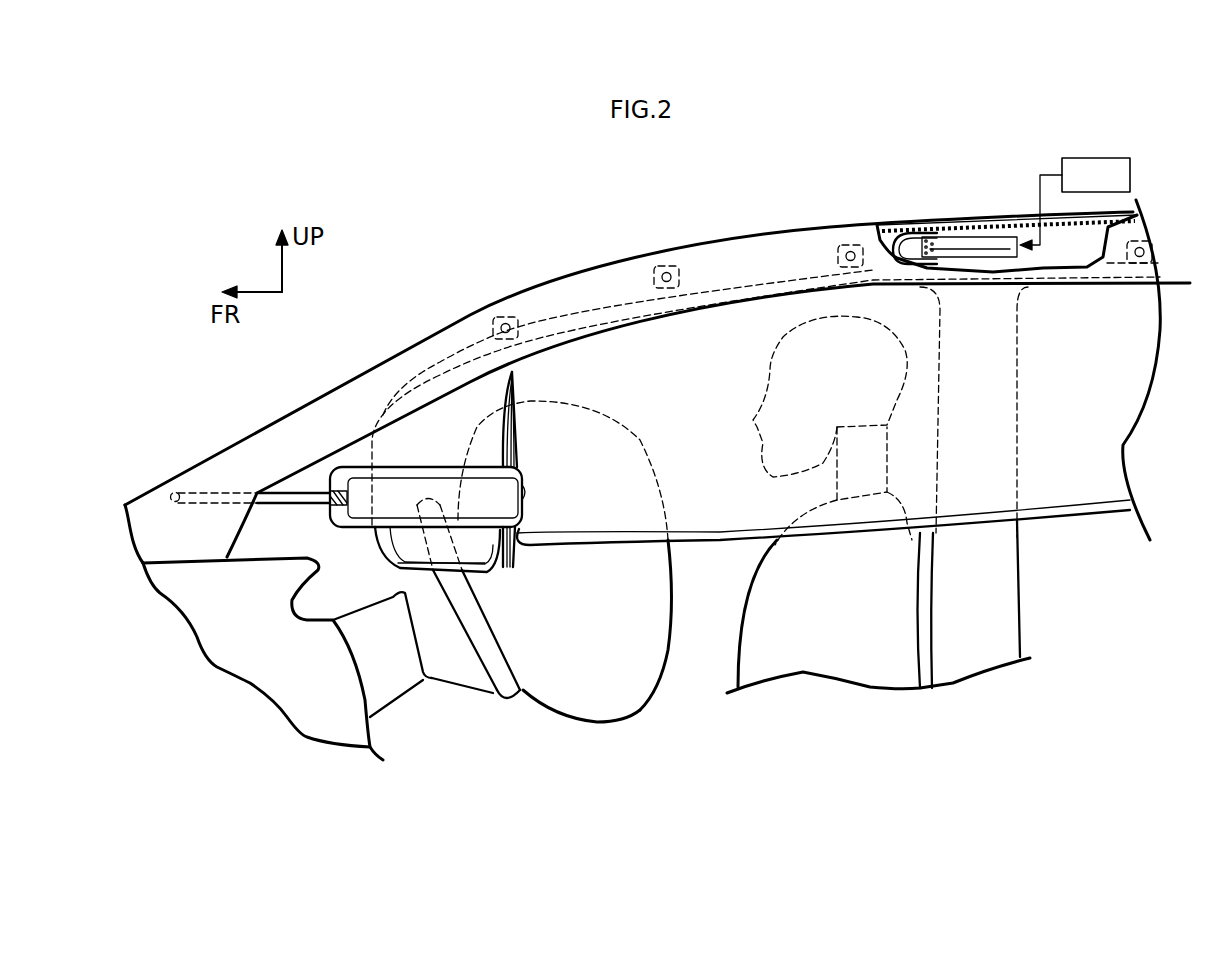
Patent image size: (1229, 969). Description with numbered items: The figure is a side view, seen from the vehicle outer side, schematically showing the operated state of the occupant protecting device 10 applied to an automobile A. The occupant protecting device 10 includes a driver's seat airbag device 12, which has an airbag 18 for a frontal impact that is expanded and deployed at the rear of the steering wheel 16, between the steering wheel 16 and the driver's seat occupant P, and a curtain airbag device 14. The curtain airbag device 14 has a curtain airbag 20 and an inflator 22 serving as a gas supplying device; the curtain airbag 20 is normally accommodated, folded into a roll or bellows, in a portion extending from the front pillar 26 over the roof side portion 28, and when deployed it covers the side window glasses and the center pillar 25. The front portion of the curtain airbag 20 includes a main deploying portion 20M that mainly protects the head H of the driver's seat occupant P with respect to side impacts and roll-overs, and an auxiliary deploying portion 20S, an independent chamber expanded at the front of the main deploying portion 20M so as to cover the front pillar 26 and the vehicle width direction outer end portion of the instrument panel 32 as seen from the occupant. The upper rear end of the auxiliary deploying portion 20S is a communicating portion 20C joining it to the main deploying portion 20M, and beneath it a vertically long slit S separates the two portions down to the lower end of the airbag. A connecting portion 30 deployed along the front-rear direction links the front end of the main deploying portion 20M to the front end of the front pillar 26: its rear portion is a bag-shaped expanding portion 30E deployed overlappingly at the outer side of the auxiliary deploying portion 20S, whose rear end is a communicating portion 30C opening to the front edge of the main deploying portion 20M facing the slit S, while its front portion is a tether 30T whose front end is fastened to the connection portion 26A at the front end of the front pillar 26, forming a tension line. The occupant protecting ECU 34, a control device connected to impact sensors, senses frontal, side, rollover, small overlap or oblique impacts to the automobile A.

The occupant protecting device 10 is at (693, 645).
The driver's seat airbag device 12 is at (572, 725).
The curtain airbag device 14 is at (972, 180).
The steering wheel 16 is at (508, 698).
The airbag for a frontal impact 18 is at (612, 705).
The curtain airbag 20 is at (753, 327).
The communicating portion 20C is at (513, 367).
The main deploying portion 20M is at (657, 350).
The auxiliary deploying portion 20S is at (447, 417).
The inflator 22 is at (978, 238).
The center pillar 25 is at (1003, 583).
The front pillar 26 is at (390, 363).
The connection portion 26A is at (177, 493).
The roof side portion 28 is at (1007, 230).
The connecting portion 30 is at (353, 400).
The communicating portion 30C is at (522, 485).
The expanding portion 30E is at (397, 487).
The tether 30T is at (283, 493).
The instrument panel 32 is at (312, 705).
The occupant protecting ECU 34 is at (1130, 175).
The automobile A is at (725, 222).
The head H is at (857, 337).
The driver's seat occupant P is at (740, 607).
The slit S is at (513, 400).